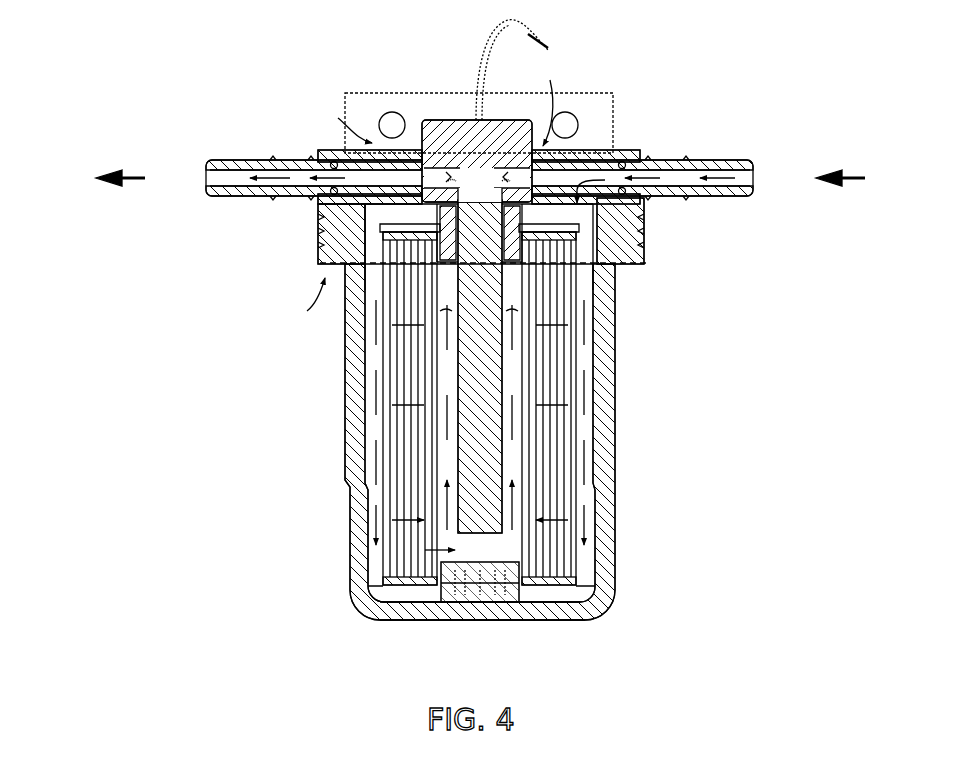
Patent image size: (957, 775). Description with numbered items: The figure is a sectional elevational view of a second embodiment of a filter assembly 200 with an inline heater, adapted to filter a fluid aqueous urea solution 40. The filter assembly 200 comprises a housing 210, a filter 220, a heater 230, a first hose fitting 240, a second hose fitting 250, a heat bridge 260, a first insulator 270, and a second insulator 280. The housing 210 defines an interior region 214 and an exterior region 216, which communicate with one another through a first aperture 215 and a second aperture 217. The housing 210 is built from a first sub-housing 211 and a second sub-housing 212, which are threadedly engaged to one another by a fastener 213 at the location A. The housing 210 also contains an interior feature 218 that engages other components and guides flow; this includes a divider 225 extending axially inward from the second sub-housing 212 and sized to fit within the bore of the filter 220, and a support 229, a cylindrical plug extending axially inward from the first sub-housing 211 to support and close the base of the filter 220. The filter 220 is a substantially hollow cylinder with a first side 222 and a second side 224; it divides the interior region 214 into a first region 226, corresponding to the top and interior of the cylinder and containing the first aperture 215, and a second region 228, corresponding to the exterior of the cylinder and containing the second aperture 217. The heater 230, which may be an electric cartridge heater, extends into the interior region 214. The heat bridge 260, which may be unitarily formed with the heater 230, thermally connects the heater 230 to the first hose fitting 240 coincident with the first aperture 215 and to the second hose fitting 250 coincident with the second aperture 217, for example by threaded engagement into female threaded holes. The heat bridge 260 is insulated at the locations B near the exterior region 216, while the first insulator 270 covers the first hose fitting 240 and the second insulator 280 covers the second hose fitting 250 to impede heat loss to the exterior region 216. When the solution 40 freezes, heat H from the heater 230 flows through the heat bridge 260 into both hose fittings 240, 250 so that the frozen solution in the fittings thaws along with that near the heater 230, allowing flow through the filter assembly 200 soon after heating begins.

The fluid aqueous urea solution 40 is at (118, 170).
The filter assembly 200 is at (246, 394).
The housing 210 is at (346, 390).
The first sub-housing 211 is at (346, 484).
The second sub-housing 212 is at (340, 208).
The fastener 213 is at (334, 228).
The interior region 214 is at (455, 551).
The first aperture 215 is at (207, 192).
The exterior region 216 is at (425, 667).
The second aperture 217 is at (745, 192).
The interior feature 218 is at (510, 268).
The filter 220 is at (562, 602).
The first side 222 is at (518, 550).
The second side 224 is at (578, 552).
The divider 225 is at (518, 228).
The first region 226 is at (503, 450).
The second region 228 is at (585, 414).
The support 229 is at (443, 592).
The heater 230 is at (480, 353).
The first hose fitting 240 is at (214, 164).
The second hose fitting 250 is at (735, 164).
The heat bridge 260 is at (474, 118).
The first insulator 270 is at (330, 150).
The second insulator 280 is at (612, 150).
The threaded engagement location A is at (471, 292).
The insulated locations B is at (436, 102).
The heat H is at (477, 245).